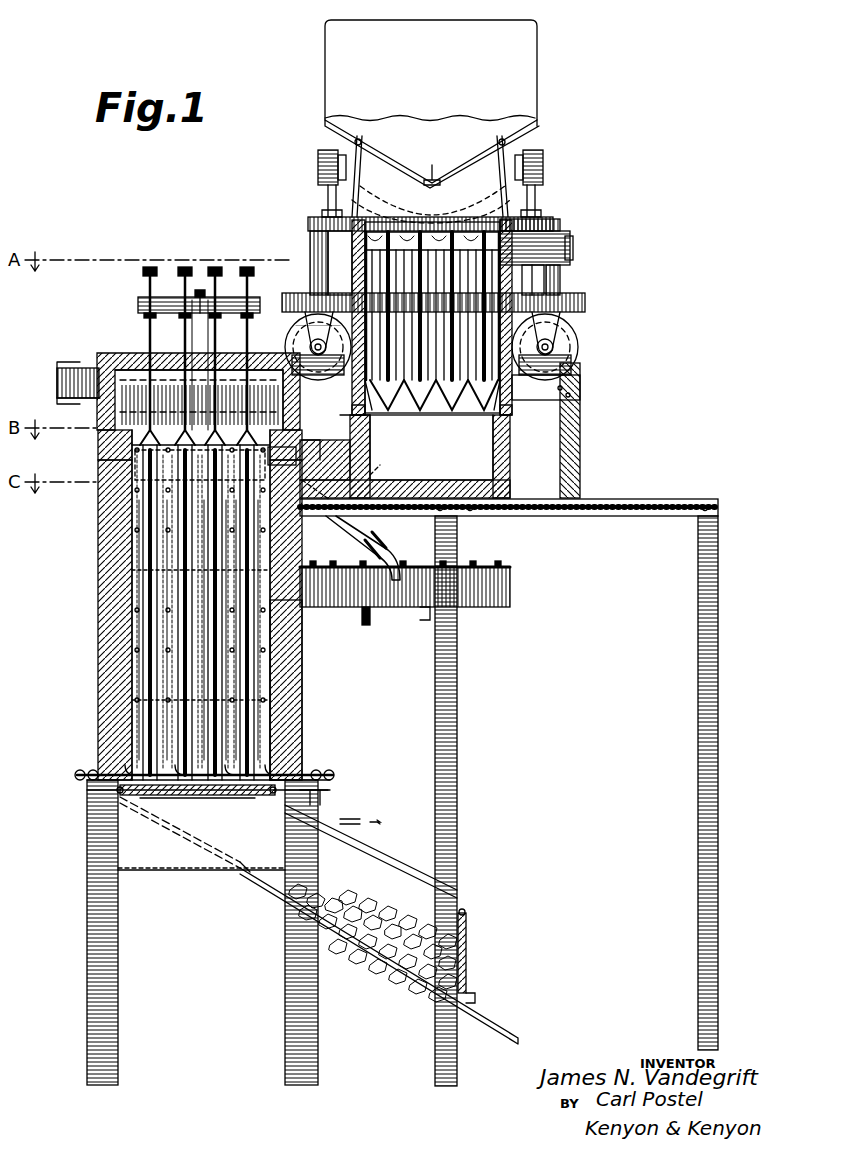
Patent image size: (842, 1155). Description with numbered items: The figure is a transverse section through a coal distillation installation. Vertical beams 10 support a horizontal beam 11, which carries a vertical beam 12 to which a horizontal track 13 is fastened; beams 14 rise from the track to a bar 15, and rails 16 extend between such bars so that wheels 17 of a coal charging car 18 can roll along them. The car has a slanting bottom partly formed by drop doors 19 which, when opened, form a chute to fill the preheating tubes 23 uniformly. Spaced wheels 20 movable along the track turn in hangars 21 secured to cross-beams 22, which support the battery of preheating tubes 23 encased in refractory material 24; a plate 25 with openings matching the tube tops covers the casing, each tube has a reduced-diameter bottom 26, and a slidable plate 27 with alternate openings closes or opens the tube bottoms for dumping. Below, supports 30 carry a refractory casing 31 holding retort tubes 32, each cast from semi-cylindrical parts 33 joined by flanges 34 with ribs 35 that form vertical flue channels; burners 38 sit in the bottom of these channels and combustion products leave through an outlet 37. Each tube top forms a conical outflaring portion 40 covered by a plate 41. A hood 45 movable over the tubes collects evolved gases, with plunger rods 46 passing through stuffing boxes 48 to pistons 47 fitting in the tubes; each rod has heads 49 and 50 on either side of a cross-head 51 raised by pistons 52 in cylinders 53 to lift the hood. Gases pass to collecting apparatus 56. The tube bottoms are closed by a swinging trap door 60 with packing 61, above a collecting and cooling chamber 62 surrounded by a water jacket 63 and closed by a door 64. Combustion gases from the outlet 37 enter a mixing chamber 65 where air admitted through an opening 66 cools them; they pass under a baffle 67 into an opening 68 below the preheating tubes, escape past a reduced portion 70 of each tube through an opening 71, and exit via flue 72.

The vertical beams 10 is at (698, 676).
The horizontal beam 11 is at (634, 492).
The vertical beam 12 is at (580, 440).
The horizontal track 13 is at (582, 386).
The beams 14 is at (322, 262).
The bar 15 is at (318, 250).
The rails 16 is at (328, 205).
The wheels 17 is at (322, 162).
The coal charging car 18 is at (431, 70).
The drop doors 19 is at (478, 166).
The spaced wheels 20 is at (292, 348).
The hangars 21 is at (305, 322).
The cross-beams 22 is at (585, 302).
The preheating tubes 23 is at (432, 317).
The refractory material 24 is at (352, 406).
The plate 25 is at (522, 224).
The reduced diameter portion 26 is at (431, 447).
The plate 27 is at (341, 424).
The supports 30 is at (112, 992).
The casing 31 is at (110, 612).
The retort tubes 32 is at (137, 520).
The semi-cylindrical parts 33 is at (132, 545).
The flanges 34 is at (132, 690).
The ribs 35 is at (150, 575).
The outlet 37 is at (294, 453).
The burners 38 is at (92, 768).
The conical outflaring portion 40 is at (100, 452).
The plate 41 is at (118, 458).
The hood 45 is at (97, 362).
The plunger rods 46 is at (152, 360).
The piston 47 is at (135, 480).
The stuffing boxes 48 is at (142, 360).
The enlarged head 49 is at (192, 267).
The head 50 is at (138, 305).
The cross-head 51 is at (258, 300).
The pistons 52 is at (217, 360).
The cylinders 53 is at (302, 712).
The collecting apparatus 56 is at (405, 608).
The swinging trap door 60 is at (205, 796).
The packing 61 is at (118, 798).
The collecting and cooling chamber 62 is at (290, 890).
The water jacket 63 is at (392, 846).
The door 64 is at (466, 950).
The mixing chamber 65 is at (323, 481).
The opening 66 is at (323, 525).
The baffle 67 is at (429, 466).
The opening 68 is at (435, 437).
The reduced diameter portion 70 is at (440, 352).
The opening 71 is at (528, 280).
The flue 72 is at (570, 248).